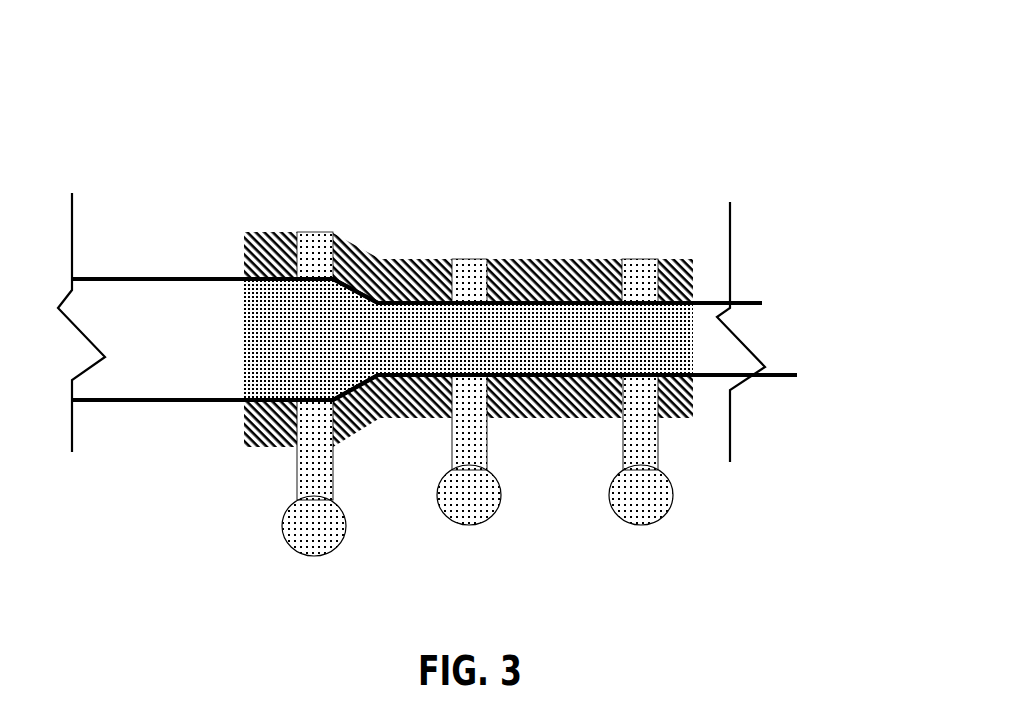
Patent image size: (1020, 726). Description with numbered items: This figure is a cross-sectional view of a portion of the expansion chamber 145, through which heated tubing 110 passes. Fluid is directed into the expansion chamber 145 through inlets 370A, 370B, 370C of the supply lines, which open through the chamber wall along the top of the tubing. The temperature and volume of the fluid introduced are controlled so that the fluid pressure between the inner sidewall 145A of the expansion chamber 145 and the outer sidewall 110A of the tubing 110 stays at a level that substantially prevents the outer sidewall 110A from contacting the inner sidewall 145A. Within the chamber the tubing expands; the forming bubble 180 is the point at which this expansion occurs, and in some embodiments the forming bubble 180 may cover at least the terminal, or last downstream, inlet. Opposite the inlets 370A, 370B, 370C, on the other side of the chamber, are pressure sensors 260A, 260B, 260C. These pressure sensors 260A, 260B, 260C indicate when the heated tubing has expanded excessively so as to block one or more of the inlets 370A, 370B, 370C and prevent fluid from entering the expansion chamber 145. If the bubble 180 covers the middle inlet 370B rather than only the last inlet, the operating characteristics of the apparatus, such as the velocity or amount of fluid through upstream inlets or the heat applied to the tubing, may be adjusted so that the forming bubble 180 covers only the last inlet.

The tubing 110 is at (170, 256).
The outer sidewall 110A is at (529, 303).
The expansion chamber 145 is at (704, 198).
The inner sidewall 145A is at (693, 405).
The forming bubble 180 is at (363, 264).
The inlet 370A is at (640, 259).
The inlet 370B is at (468, 259).
The inlet 370C is at (313, 232).
The pressure sensor 260A is at (313, 556).
The pressure sensor 260B is at (468, 525).
The pressure sensor 260C is at (641, 525).